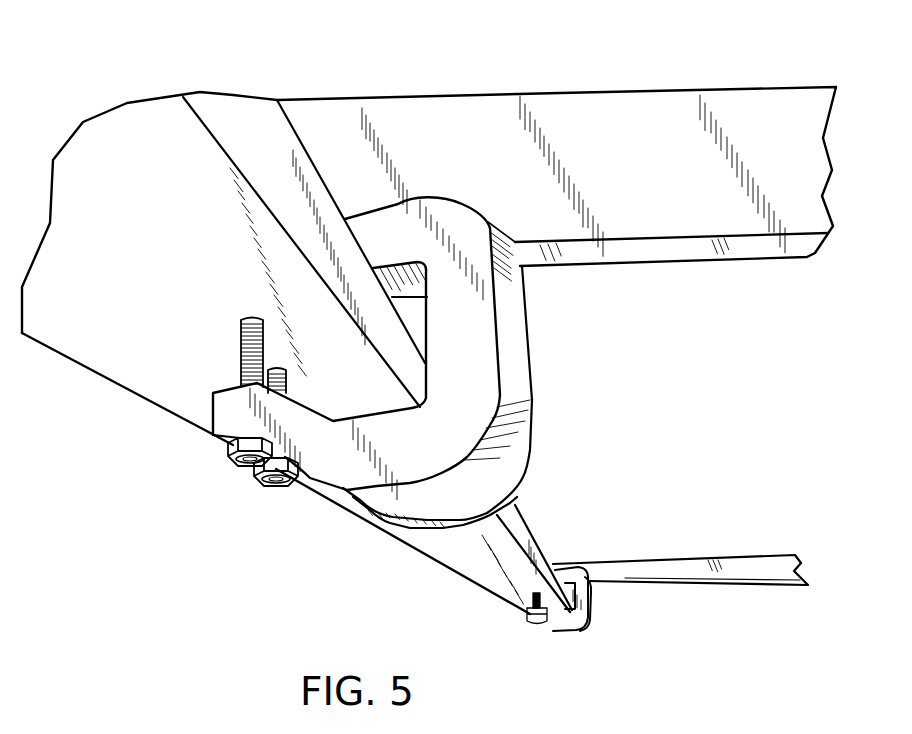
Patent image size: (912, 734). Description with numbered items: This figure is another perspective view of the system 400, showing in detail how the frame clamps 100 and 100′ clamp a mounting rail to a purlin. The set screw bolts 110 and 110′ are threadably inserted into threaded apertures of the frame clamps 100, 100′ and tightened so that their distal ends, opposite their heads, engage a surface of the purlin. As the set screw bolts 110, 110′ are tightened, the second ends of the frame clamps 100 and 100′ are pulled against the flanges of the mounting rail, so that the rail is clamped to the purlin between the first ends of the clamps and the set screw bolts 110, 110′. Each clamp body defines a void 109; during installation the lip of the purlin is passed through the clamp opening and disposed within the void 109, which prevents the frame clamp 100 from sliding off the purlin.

The system 400 is at (465, 45).
The frame clamp 100 is at (333, 478).
The frame clamp 100′ is at (513, 489).
The void 109 is at (392, 391).
The set screw bolt 110 is at (230, 457).
The set screw bolt 110′ is at (276, 486).